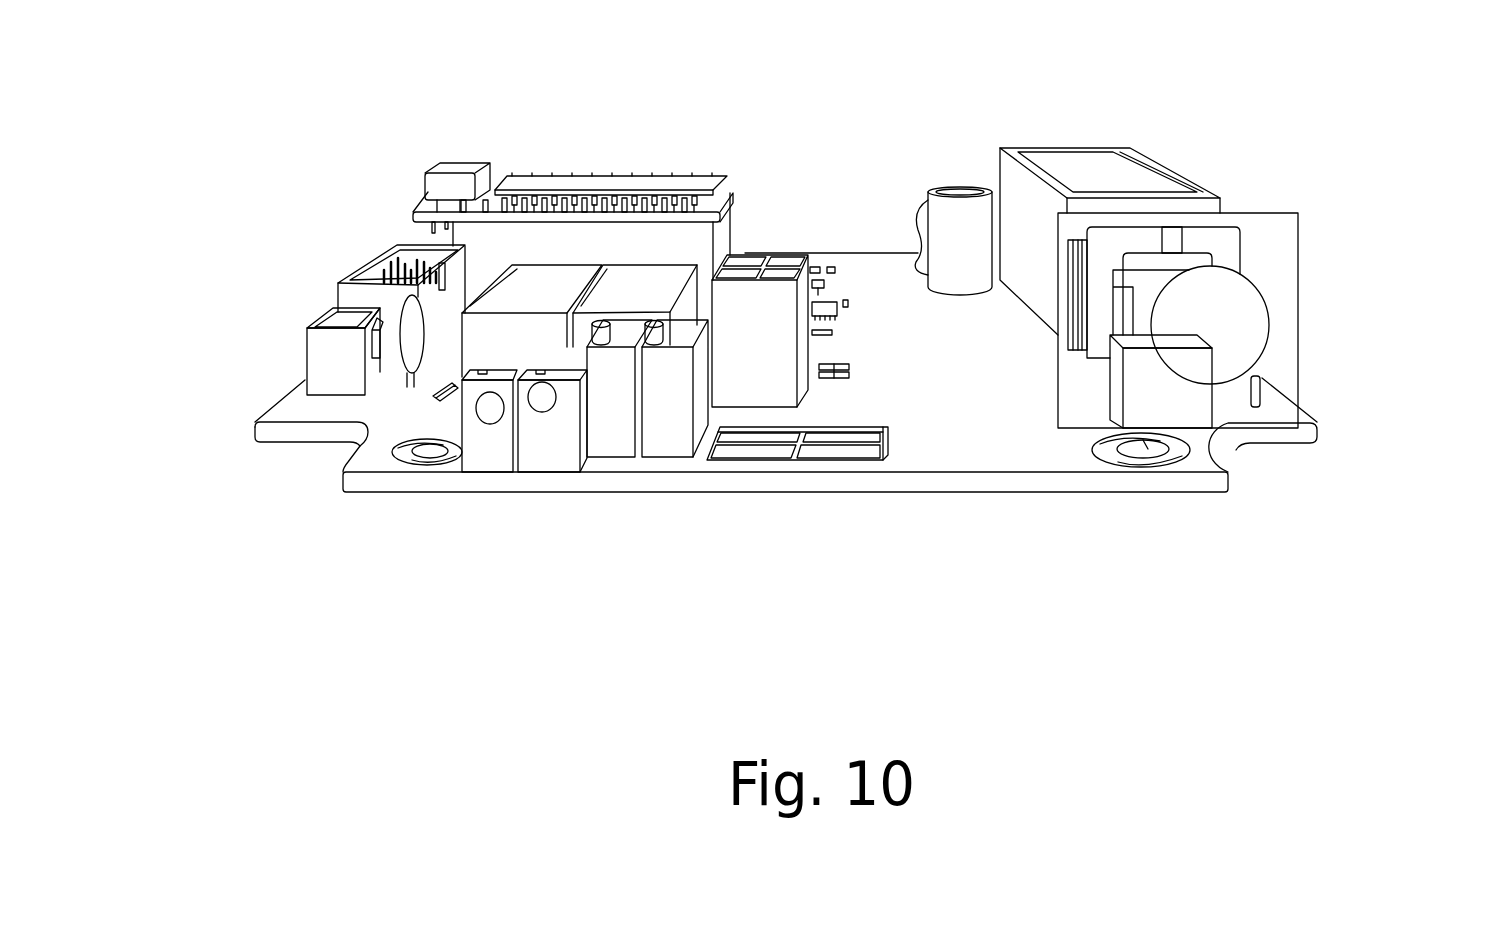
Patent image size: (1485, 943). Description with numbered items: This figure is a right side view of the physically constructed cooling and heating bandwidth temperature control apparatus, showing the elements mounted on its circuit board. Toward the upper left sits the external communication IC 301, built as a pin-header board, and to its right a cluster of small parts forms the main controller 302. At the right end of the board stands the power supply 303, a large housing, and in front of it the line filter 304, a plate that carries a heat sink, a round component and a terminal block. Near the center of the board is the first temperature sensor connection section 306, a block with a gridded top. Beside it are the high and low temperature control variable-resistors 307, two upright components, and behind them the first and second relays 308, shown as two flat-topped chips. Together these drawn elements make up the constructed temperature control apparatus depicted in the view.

The external communication IC 301 is at (549, 187).
The main controller 302 is at (826, 312).
The power supply 303 is at (1108, 160).
The line filter 304 is at (1300, 342).
The first temperature sensor connection section 306 is at (760, 392).
The high and low temperature control variable-resistors 307 is at (668, 430).
The first and second relays 308 is at (607, 300).